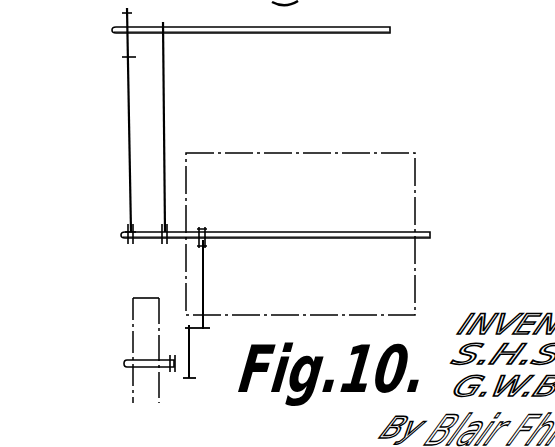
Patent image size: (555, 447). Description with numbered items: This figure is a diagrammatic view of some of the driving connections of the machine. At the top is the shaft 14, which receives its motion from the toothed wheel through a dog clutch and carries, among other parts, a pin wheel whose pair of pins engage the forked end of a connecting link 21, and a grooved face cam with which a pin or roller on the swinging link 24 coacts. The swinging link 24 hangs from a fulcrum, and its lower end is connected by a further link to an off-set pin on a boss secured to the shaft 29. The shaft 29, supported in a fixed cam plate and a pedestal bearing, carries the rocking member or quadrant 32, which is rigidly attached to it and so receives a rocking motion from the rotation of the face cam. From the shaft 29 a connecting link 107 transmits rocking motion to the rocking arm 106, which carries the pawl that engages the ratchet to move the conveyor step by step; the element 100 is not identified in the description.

The shaft 14 is at (276, 34).
The swinging link 24 is at (129, 57).
The connecting link 21 is at (165, 100).
The rocking member or quadrant 32 is at (326, 164).
The shaft 29 is at (303, 239).
The connecting link 107 is at (205, 282).
The post 100 is at (143, 313).
The rocking arm 106 is at (173, 368).